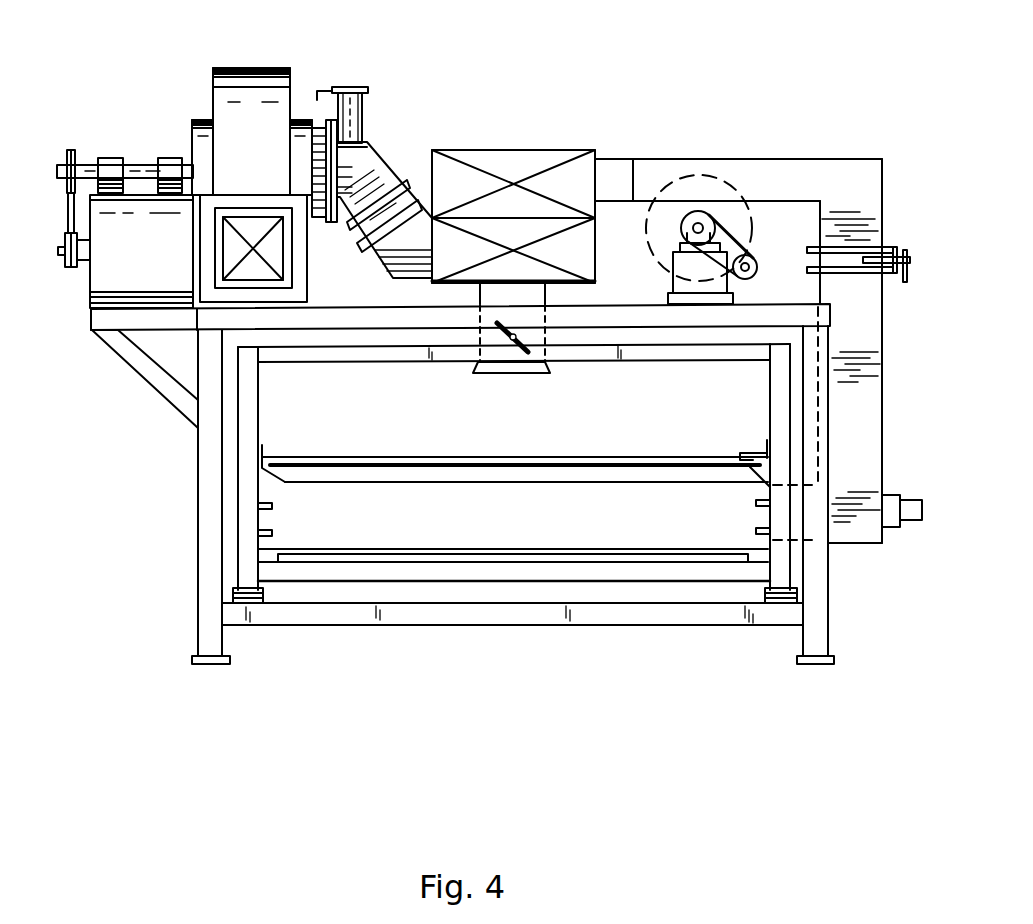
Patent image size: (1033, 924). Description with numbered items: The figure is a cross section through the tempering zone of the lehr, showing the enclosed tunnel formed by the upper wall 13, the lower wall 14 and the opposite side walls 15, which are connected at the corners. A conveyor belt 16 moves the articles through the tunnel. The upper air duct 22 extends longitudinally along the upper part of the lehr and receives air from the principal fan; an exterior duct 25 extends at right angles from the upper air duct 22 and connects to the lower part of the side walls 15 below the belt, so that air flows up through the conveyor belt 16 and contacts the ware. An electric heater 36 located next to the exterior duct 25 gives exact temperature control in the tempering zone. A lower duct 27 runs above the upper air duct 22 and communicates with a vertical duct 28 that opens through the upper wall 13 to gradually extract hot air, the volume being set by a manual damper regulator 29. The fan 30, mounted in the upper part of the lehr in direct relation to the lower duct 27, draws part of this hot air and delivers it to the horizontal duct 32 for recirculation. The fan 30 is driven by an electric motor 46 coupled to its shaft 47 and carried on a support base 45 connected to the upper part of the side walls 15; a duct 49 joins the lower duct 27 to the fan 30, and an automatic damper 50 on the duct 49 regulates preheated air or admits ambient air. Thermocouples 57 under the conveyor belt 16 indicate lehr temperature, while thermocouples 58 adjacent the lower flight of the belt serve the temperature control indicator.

The upper wall 13 is at (792, 338).
The lower wall 14 is at (498, 625).
The side walls 15 is at (228, 513).
The conveyor belt 16 is at (417, 467).
The upper air duct 22 is at (540, 158).
The exterior duct 25 is at (868, 202).
The lower duct 27 is at (592, 230).
The vertical duct 28 is at (550, 364).
The manual damper regulator 29 is at (518, 351).
The fan 30 is at (277, 68).
The horizontal duct 32 is at (270, 279).
The electric heater 36 is at (922, 508).
The support base 45 is at (150, 370).
The electric motor 46 is at (118, 278).
The shaft 47 is at (140, 163).
The duct 49 is at (385, 165).
The automatic damper 50 is at (357, 87).
The thermocouples 57 is at (272, 505).
The thermocouples 58 is at (272, 533).